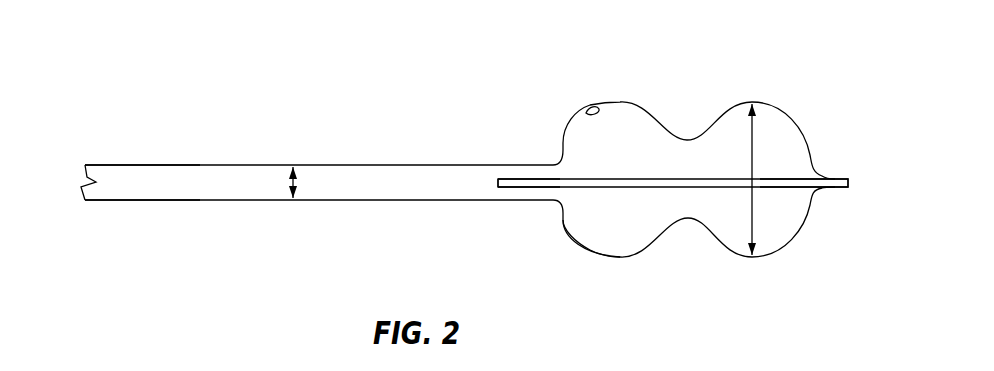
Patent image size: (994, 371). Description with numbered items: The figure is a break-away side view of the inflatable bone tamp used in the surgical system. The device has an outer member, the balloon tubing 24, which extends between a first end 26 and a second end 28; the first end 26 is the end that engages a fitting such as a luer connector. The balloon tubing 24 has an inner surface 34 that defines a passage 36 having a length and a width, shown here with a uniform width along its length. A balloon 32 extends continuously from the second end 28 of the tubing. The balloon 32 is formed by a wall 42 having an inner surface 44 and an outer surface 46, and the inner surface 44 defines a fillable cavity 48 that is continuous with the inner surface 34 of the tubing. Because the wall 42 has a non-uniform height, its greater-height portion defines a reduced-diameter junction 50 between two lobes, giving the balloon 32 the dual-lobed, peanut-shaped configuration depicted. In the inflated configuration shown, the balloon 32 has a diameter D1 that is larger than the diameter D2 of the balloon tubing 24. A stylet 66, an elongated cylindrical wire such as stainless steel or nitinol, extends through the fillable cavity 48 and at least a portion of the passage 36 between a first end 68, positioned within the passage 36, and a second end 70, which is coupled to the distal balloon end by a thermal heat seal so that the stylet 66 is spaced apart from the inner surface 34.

The balloon tubing 24 is at (437, 154).
The first end 26 is at (102, 165).
The passage 36 is at (92, 182).
The inner surface 34 is at (173, 200).
The second end 28 is at (553, 200).
The inner surface 44 is at (587, 112).
The outer surface 46 is at (613, 101).
The reduced-diameter junction 50 is at (687, 140).
The second end 70 is at (830, 178).
The balloon 32 is at (686, 246).
The wall 42 is at (613, 258).
The stylet 66 is at (629, 196).
The first end 68 is at (527, 179).
The fillable cavity 48 is at (792, 200).
The diameter of balloon D1 is at (767, 179).
The diameter of balloon tubing D2 is at (308, 182).